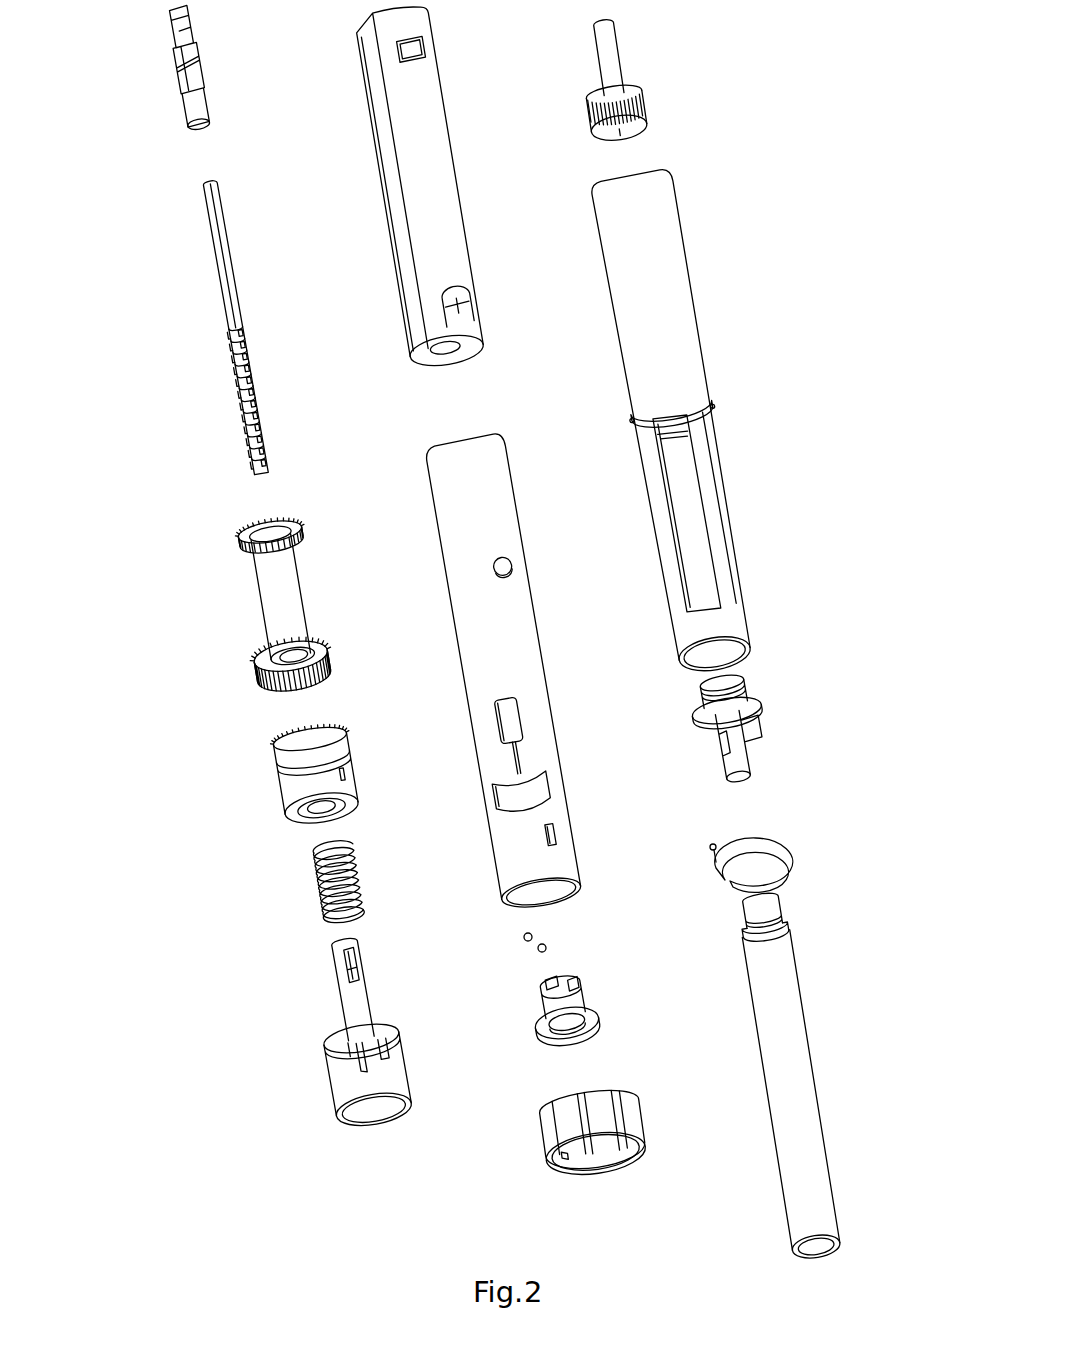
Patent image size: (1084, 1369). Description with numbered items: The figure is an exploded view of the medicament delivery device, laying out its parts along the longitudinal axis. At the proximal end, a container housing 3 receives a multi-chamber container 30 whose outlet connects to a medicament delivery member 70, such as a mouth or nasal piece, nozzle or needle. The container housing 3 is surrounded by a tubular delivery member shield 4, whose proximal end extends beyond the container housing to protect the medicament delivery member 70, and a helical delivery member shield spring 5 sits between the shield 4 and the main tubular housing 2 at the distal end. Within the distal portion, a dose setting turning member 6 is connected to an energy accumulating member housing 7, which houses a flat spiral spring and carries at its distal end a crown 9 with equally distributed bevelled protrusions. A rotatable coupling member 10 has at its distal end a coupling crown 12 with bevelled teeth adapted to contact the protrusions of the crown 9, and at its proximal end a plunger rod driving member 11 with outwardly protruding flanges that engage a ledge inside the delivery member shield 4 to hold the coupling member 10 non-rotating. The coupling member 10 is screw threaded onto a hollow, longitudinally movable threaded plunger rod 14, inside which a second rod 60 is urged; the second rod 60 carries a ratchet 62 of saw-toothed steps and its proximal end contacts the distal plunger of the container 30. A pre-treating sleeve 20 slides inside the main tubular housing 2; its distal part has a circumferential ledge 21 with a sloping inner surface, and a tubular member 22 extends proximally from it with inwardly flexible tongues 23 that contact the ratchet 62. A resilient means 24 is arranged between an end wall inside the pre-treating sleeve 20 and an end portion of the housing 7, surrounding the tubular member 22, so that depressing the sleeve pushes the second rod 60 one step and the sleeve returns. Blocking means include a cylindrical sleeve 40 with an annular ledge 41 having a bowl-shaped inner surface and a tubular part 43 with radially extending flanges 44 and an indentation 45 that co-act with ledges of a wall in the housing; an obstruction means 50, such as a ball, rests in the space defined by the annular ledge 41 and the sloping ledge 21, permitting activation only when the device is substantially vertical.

The main tubular housing 2 is at (442, 614).
The container housing 3 is at (373, 233).
The delivery member shield 4 is at (612, 358).
The delivery member shield spring 5 is at (707, 865).
The dose setting turning member 6 is at (533, 1150).
The energy accumulating member housing 7 is at (278, 774).
The crown 9 is at (274, 756).
The rotatable coupling member 10 is at (266, 609).
The plunger rod driving member 11 is at (240, 531).
The coupling crown 12 is at (258, 672).
The threaded plunger rod 14 is at (205, 50).
The pre-treating sleeve 20 is at (327, 1040).
The circumferential ledge 21 is at (328, 1062).
The tubular member 22 is at (352, 1008).
The inwardly flexible tongues 23 is at (353, 970).
The resilient means 24 is at (316, 886).
The container 30 is at (758, 1111).
The cylindrical sleeve 40 is at (546, 1003).
The annular ledge 41 is at (537, 1030).
The tubular part 43 is at (555, 998).
The radially extending flanges 44 is at (558, 983).
The indentation 45 is at (583, 997).
The obstruction means 50 is at (512, 935).
The second rod 60 is at (242, 327).
The ratchet 62 is at (243, 350).
The medicament delivery member 70 is at (580, 108).